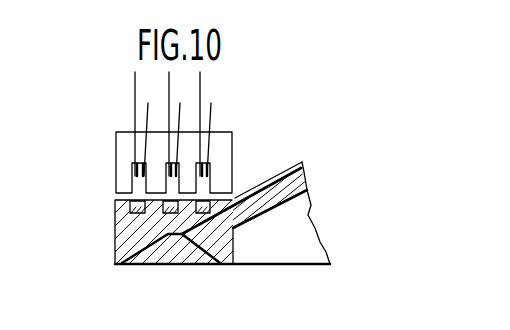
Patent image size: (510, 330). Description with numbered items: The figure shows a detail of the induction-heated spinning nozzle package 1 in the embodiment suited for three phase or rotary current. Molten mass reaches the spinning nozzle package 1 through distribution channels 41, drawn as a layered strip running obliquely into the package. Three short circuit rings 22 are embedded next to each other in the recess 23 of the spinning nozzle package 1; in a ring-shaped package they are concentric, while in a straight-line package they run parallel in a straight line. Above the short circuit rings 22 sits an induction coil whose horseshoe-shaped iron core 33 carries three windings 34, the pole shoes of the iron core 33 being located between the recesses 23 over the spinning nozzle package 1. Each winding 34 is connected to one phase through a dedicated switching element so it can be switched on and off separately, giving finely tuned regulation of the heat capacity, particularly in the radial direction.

The spinning nozzle package 1 is at (292, 232).
The short circuit rings 22 is at (132, 195).
The recess 23 is at (203, 215).
The horseshoe-shaped iron core 33 is at (222, 167).
The windings 34 is at (137, 130).
The distribution channels 41 is at (307, 172).